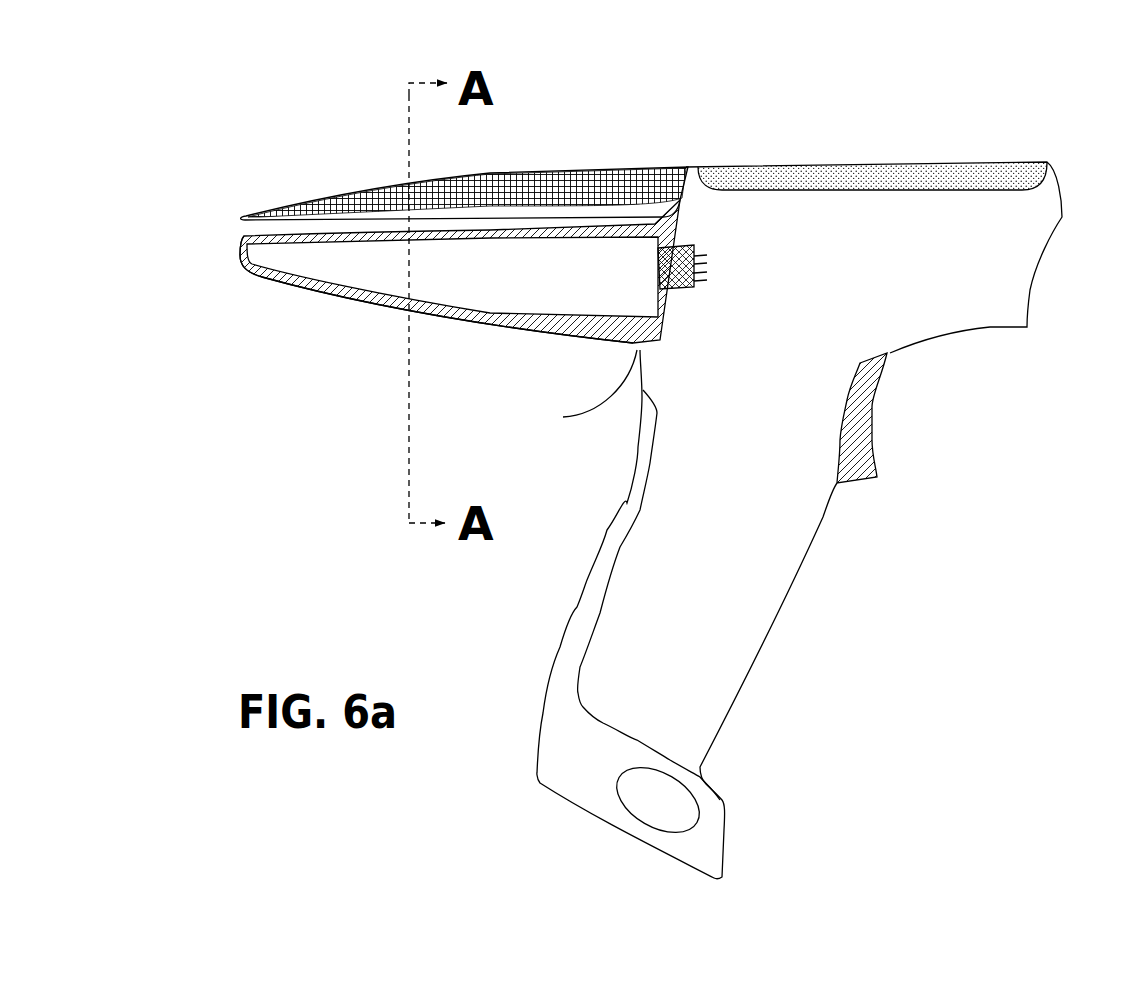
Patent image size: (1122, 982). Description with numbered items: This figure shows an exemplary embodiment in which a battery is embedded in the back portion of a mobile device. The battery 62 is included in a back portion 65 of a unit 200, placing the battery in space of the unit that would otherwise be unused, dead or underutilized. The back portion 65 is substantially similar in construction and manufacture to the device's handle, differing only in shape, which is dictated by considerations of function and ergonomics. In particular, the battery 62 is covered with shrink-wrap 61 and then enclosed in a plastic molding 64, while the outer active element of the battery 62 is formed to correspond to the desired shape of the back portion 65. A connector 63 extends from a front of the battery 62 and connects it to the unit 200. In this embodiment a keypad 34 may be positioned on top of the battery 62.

The unit 200 is at (612, 137).
The keypad 34 is at (287, 183).
The shrink-wrap 61 is at (517, 320).
The battery 62 is at (372, 290).
The connector 63 is at (720, 268).
The plastic molding 64 is at (634, 346).
The back portion 65 is at (243, 297).